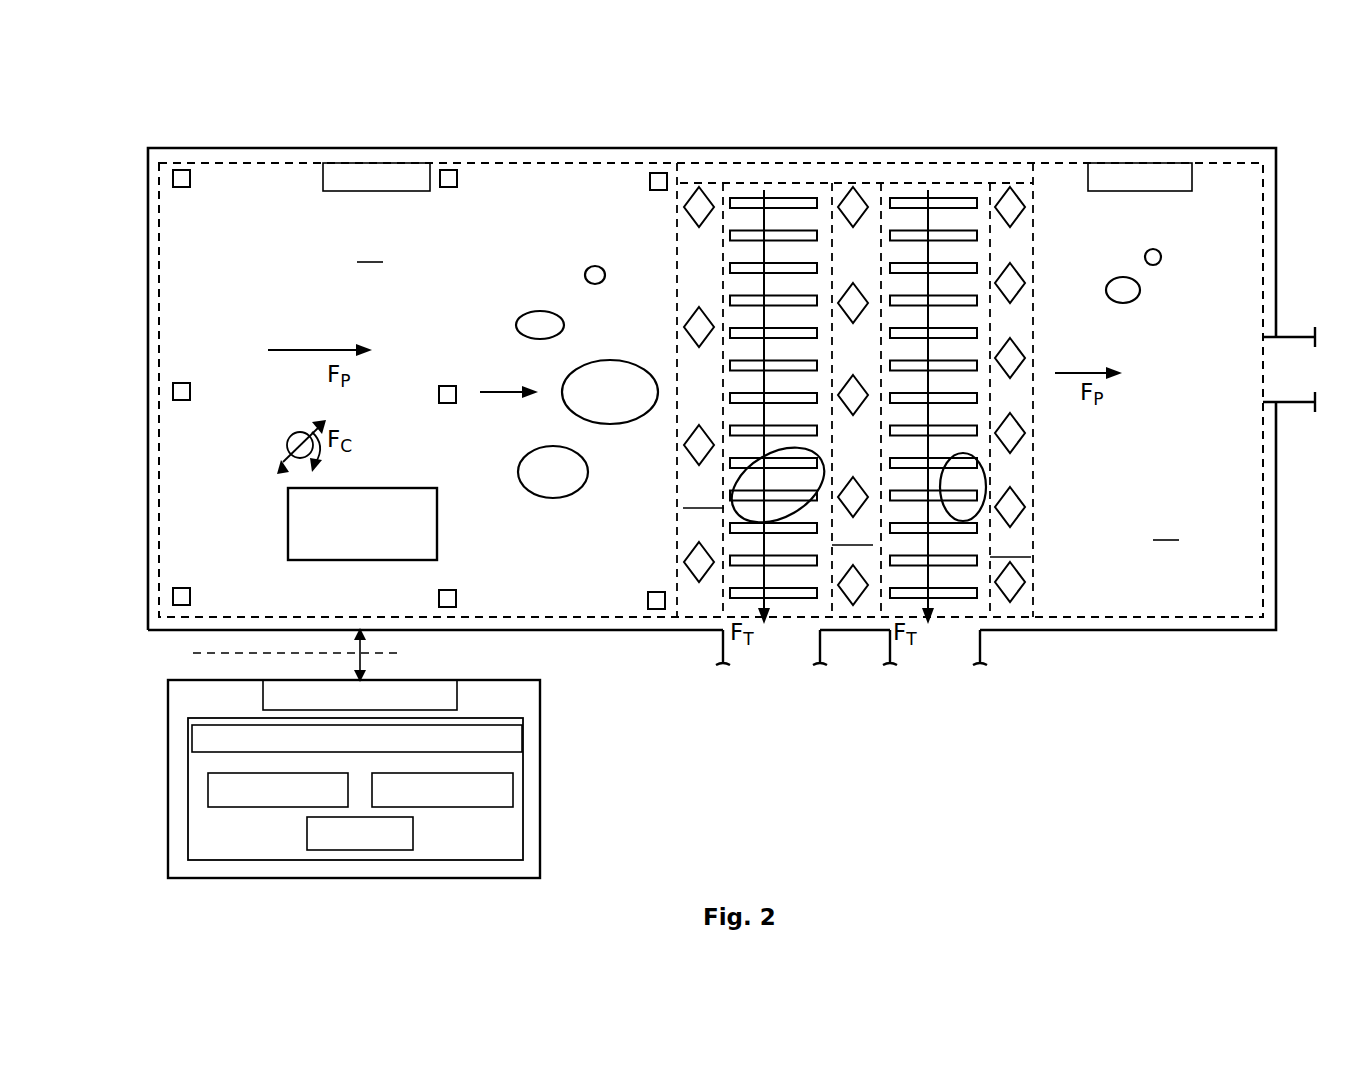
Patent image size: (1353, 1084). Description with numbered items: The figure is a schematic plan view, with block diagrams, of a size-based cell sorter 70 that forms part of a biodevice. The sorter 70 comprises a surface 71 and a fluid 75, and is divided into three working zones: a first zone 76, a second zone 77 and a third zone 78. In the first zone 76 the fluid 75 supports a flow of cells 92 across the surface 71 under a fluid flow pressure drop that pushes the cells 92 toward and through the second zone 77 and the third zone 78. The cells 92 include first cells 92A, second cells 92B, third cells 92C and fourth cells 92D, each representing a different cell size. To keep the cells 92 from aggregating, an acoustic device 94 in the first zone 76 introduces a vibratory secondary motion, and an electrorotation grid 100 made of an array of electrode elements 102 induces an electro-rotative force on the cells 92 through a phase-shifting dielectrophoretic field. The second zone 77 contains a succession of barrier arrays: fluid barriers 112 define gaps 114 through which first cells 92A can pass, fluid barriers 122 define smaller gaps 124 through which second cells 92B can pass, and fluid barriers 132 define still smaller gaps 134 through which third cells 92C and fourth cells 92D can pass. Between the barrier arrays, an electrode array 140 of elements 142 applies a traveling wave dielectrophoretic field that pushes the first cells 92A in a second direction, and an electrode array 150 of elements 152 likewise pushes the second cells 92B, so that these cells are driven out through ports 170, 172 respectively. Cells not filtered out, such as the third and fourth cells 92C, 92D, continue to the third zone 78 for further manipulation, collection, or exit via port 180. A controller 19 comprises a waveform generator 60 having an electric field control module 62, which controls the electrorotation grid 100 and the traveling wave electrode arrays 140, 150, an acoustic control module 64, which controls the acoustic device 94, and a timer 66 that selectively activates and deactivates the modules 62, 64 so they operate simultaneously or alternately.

The controller 19 is at (358, 753).
The waveform generator 60 is at (358, 789).
The electric field control module 62 is at (208, 788).
The acoustic control module 64 is at (513, 790).
The timer 66 is at (413, 838).
The size-based sorter 70 is at (694, 118).
The surface 71 is at (300, 178).
The fluid 75 is at (769, 388).
The first zone 76 is at (236, 163).
The second zone 77 is at (852, 152).
The third zone 78 is at (1125, 166).
The cells 92 is at (871, 398).
The first cell 92A is at (615, 360).
The second cell 92B is at (588, 475).
The third cell 92C is at (545, 311).
The fourth cell 92D is at (601, 266).
The acoustic device 94 is at (400, 488).
The electrorotation grid 100 is at (378, 384).
The electrode elements 102 is at (173, 178).
The fluid barriers 112 is at (684, 445).
The gaps 114 is at (653, 390).
The fluid barriers 122 is at (858, 486).
The gaps 124 is at (852, 441).
The fluid barriers 132 is at (1023, 497).
The gaps 134 is at (1052, 398).
The electrode array 140 is at (774, 449).
The elements 142 is at (800, 600).
The electrode array 150 is at (953, 450).
The elements 152 is at (967, 600).
The port 170 is at (722, 652).
The port 172 is at (983, 655).
The port 180 is at (1292, 336).